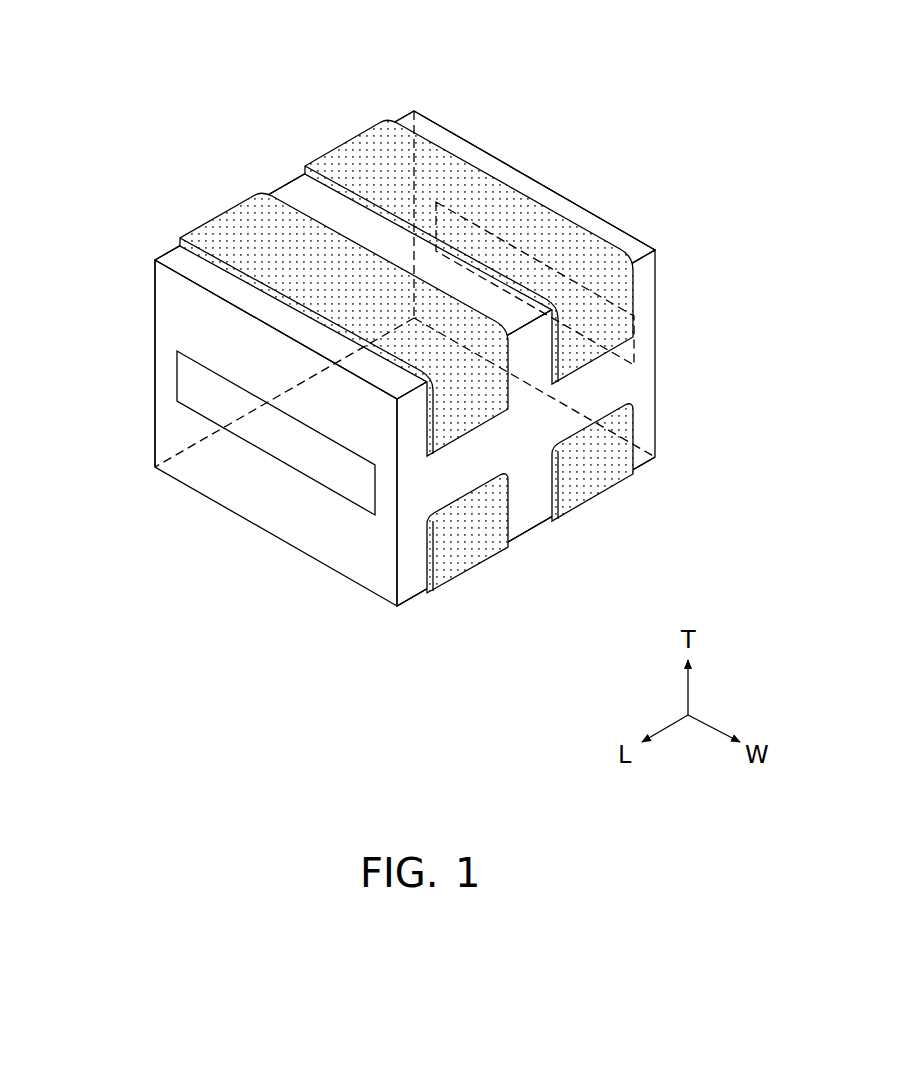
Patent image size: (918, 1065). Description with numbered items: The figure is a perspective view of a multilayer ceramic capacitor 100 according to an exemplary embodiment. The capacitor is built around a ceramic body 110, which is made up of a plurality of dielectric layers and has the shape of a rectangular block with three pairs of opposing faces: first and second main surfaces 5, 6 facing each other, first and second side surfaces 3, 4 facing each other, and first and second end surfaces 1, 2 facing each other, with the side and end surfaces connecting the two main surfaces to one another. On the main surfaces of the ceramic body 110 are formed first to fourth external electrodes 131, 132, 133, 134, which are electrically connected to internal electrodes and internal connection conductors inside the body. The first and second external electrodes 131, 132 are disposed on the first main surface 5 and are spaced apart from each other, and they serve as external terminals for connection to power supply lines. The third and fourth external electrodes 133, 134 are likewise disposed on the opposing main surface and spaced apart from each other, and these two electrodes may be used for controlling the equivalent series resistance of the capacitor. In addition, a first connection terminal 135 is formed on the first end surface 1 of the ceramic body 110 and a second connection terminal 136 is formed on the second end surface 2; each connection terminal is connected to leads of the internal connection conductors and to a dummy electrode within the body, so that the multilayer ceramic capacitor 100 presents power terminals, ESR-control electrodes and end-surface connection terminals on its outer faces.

The multilayer ceramic capacitor 100 is at (417, 316).
The ceramic body 110 is at (430, 352).
The first end surface 1 is at (275, 518).
The second end surface 2 is at (600, 212).
The first side surface 3 is at (628, 384).
The second side surface 4 is at (160, 250).
The first main surface 5 is at (543, 530).
The second main surface 6 is at (534, 190).
The first external electrode 131 is at (474, 555).
The second external electrode 132 is at (597, 486).
The third external electrode 133 is at (233, 220).
The fourth external electrode 134 is at (360, 148).
The first connection terminal 135 is at (190, 379).
The second connection terminal 136 is at (603, 313).